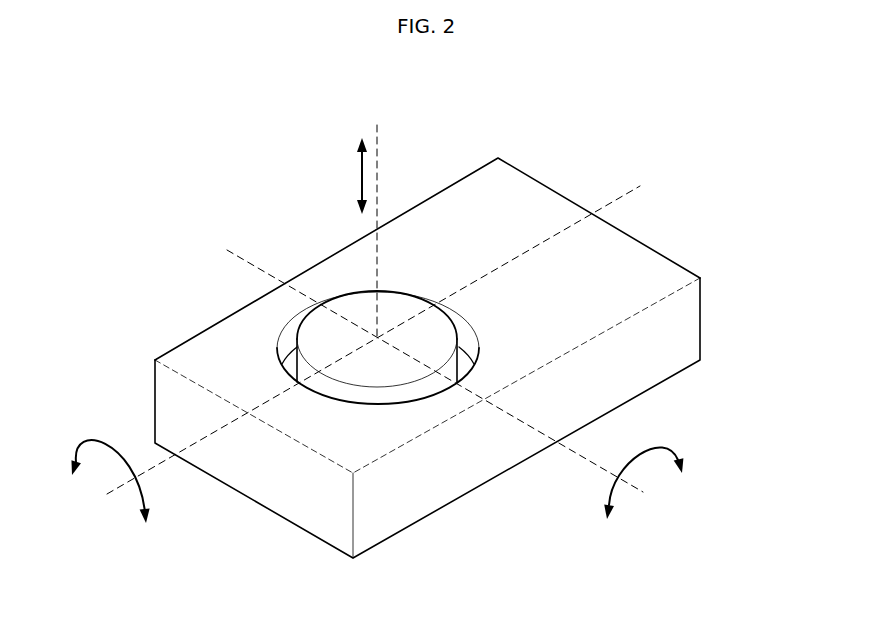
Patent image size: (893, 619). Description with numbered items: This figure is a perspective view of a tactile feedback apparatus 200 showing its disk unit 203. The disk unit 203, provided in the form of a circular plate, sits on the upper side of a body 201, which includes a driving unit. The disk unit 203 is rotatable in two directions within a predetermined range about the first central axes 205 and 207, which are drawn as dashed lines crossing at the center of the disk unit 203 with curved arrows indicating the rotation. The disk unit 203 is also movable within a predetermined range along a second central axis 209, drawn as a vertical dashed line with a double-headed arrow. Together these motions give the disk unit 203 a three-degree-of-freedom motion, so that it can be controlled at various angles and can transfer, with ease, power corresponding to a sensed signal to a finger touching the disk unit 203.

The tactile feedback apparatus 200 is at (473, 333).
The body 201 is at (667, 332).
The disk unit 203 is at (397, 367).
The first central axis 205 is at (458, 384).
The first central axis 207 is at (350, 354).
The second central axis 209 is at (377, 220).